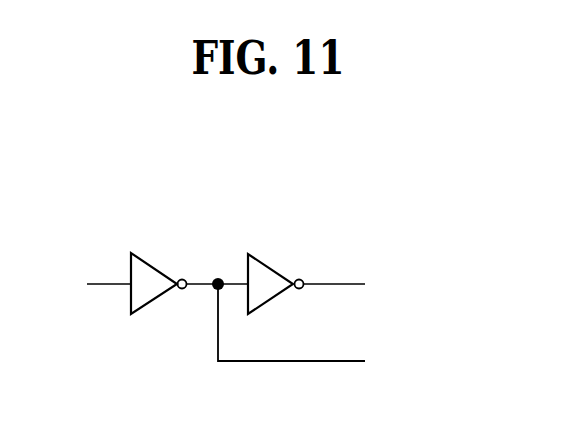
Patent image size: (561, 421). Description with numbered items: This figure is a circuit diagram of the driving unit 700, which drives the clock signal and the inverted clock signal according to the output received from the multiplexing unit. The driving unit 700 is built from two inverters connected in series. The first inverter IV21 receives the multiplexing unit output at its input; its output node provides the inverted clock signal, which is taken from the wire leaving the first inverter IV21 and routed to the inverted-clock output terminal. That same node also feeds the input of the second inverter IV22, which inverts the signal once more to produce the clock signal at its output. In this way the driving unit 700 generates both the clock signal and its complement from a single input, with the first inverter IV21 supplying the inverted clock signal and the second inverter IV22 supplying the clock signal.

The driving unit 700 is at (490, 178).
The first inverter IV21 is at (148, 265).
The second inverter IV22 is at (267, 266).